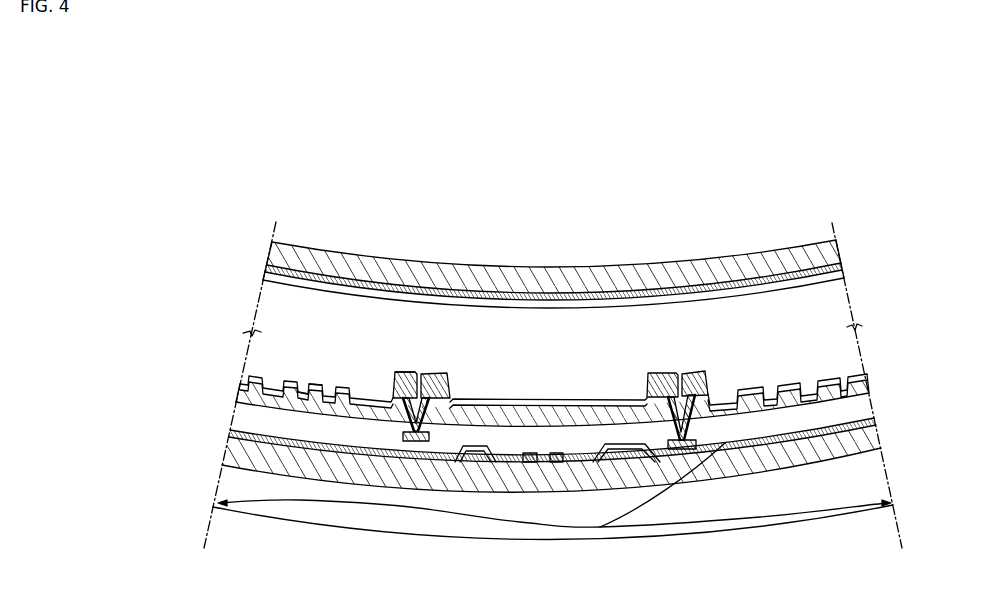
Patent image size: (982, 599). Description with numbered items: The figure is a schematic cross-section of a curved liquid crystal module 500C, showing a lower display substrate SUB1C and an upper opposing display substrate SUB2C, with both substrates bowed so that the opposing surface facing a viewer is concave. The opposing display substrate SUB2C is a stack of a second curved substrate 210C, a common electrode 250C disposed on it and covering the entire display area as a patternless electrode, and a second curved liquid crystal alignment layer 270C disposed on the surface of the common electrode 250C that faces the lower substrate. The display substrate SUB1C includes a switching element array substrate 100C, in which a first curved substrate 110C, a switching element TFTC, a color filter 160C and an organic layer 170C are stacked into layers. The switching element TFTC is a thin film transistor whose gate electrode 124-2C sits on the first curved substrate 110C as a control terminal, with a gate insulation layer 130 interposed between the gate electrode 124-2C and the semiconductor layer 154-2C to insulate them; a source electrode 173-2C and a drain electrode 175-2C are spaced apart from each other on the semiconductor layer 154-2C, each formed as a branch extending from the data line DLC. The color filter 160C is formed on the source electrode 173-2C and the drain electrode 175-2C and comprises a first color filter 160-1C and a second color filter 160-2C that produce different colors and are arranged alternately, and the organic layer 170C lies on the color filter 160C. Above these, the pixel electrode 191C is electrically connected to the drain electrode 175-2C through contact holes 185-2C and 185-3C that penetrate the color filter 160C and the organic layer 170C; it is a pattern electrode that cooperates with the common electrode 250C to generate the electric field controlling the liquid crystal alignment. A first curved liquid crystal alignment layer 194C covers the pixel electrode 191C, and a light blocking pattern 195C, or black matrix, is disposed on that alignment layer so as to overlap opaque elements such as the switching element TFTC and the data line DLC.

The liquid crystal module 500C is at (586, 168).
The display substrate SUB1C is at (355, 165).
The opposing display substrate SUB2C is at (182, 232).
The second curved substrate 210C is at (271, 250).
The common electrode 250C is at (266, 267).
The second curved liquid crystal alignment layer 270C is at (264, 277).
The switching element array substrate 100C is at (76, 525).
The organic layer 170C is at (265, 376).
The switching element TFTC is at (136, 372).
The source electrode 173-2C is at (403, 410).
The drain electrode 175-2C is at (440, 420).
The gate electrode 124-2C is at (410, 440).
The gate insulation layer 130 is at (330, 442).
The semiconductor layer 154-2C is at (480, 448).
The contact hole 185-2C is at (419, 394).
The contact hole 185-3C is at (682, 392).
The first curved liquid crystal alignment layer 194C is at (303, 378).
The pixel electrode 191C is at (310, 380).
The light blocking pattern 195C is at (397, 372).
The first curved substrate 110C is at (227, 452).
The color filter 160C is at (134, 490).
The first color filter 160-1C is at (262, 470).
The second color filter 160-2C is at (258, 508).
The data line DLC is at (560, 463).